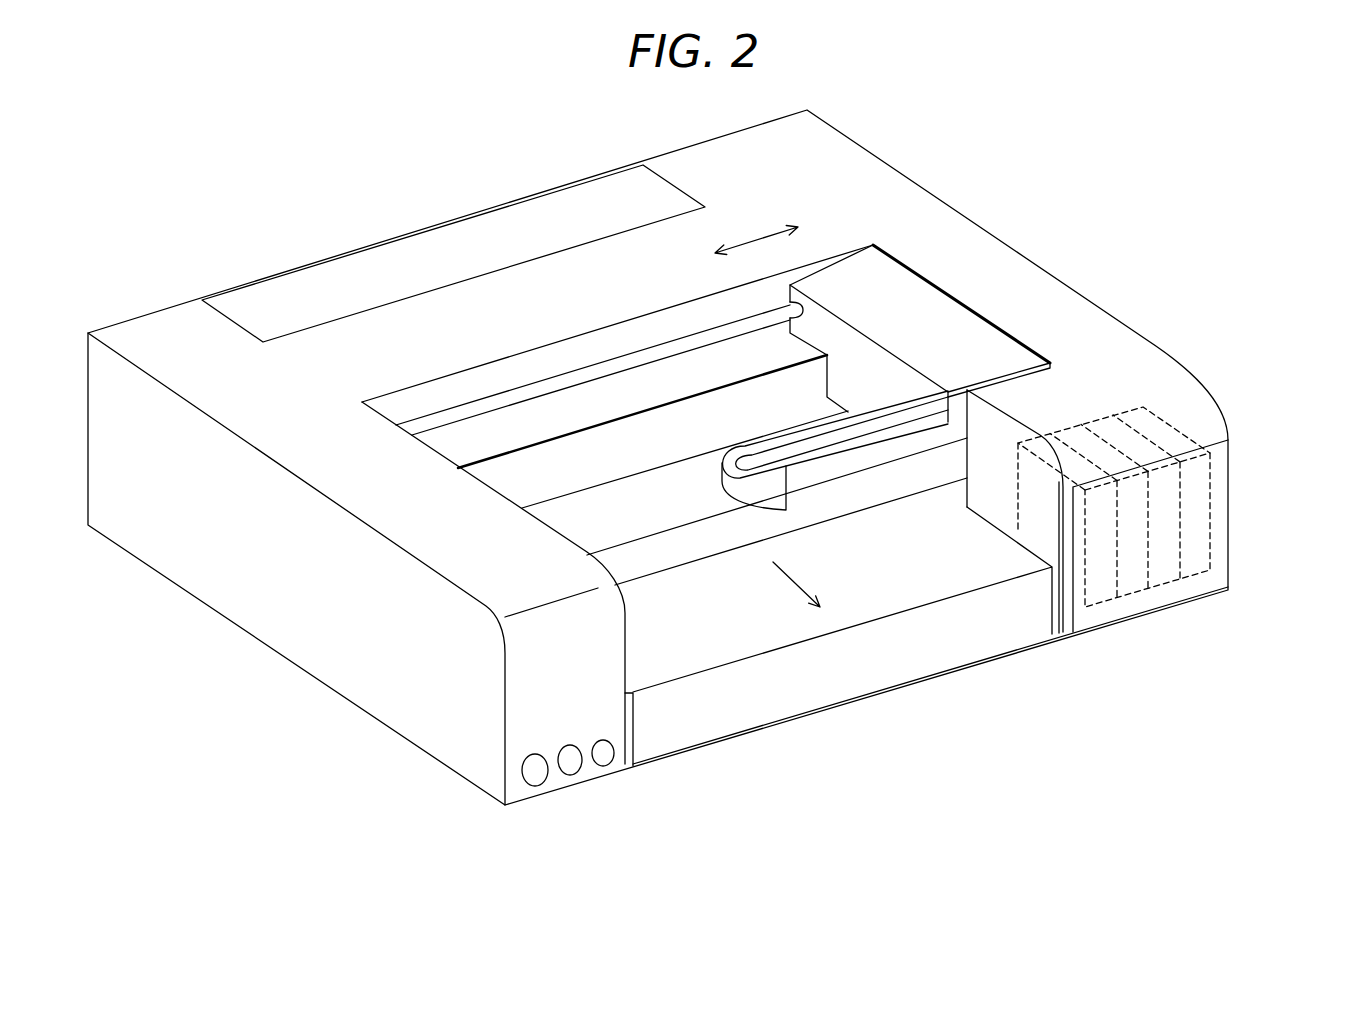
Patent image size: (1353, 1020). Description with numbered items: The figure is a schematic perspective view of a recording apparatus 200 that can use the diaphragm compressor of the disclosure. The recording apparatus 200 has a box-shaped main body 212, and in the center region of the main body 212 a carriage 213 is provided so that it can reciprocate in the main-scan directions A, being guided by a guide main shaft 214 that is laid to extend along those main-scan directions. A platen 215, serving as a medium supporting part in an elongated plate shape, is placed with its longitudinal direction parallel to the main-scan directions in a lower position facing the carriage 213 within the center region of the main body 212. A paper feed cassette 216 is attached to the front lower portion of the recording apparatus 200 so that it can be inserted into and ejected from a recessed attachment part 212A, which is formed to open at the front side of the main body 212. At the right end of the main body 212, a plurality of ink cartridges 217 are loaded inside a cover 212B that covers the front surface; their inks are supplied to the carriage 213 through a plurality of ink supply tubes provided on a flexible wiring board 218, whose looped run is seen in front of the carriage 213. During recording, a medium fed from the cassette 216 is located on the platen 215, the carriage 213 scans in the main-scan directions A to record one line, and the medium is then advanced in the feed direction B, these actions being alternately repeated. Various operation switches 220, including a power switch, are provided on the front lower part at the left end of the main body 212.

The recording apparatus 200 is at (956, 176).
The main body 212 is at (1068, 298).
The recessed attachment part 212A is at (627, 720).
The cover 212B is at (1222, 536).
The carriage 213 is at (973, 330).
The guide main shaft 214 is at (648, 353).
The platen 215 is at (682, 467).
The paper feed cassette 216 is at (872, 673).
The ink cartridges 217 is at (1197, 563).
The flexible wiring board 218 is at (833, 480).
The operation switches 220 is at (535, 786).